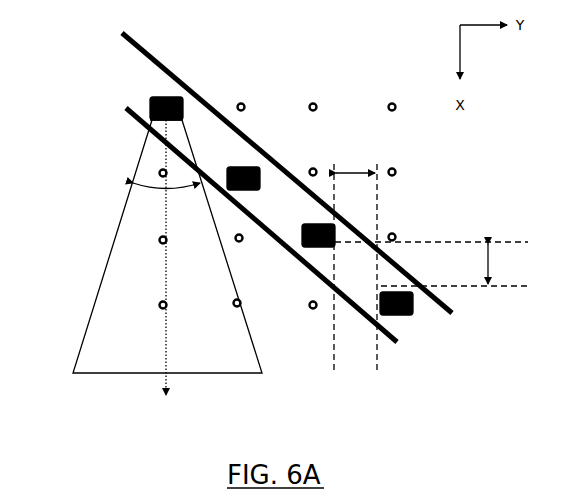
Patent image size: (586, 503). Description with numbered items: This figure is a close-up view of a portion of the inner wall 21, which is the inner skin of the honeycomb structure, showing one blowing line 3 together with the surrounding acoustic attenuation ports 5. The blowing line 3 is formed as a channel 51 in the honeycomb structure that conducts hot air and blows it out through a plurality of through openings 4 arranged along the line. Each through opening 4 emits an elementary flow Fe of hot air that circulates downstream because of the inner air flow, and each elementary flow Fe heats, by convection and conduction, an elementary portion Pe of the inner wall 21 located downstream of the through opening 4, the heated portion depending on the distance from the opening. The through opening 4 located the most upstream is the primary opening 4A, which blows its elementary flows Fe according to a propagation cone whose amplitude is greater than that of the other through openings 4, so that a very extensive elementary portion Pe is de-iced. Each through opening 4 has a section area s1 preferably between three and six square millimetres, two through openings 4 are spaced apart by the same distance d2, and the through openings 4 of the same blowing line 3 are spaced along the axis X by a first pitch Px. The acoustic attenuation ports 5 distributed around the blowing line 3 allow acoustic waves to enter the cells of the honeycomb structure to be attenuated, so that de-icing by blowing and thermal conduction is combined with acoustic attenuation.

The primary opening 4A is at (167, 97).
The through opening 4 is at (260, 167).
The acoustic attenuation port 5 is at (316, 105).
The blowing line 3 is at (300, 163).
The inner wall 21 is at (275, 42).
The section area s1 is at (243, 160).
The distance d2 is at (355, 257).
The channel 51 is at (437, 297).
The first pitch Px is at (433, 264).
The elementary portion Pe is at (96, 297).
The elementary flow Fe is at (165, 274).